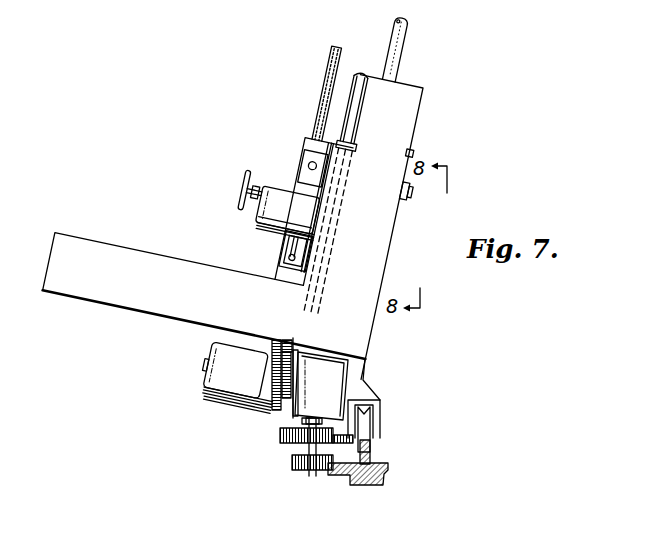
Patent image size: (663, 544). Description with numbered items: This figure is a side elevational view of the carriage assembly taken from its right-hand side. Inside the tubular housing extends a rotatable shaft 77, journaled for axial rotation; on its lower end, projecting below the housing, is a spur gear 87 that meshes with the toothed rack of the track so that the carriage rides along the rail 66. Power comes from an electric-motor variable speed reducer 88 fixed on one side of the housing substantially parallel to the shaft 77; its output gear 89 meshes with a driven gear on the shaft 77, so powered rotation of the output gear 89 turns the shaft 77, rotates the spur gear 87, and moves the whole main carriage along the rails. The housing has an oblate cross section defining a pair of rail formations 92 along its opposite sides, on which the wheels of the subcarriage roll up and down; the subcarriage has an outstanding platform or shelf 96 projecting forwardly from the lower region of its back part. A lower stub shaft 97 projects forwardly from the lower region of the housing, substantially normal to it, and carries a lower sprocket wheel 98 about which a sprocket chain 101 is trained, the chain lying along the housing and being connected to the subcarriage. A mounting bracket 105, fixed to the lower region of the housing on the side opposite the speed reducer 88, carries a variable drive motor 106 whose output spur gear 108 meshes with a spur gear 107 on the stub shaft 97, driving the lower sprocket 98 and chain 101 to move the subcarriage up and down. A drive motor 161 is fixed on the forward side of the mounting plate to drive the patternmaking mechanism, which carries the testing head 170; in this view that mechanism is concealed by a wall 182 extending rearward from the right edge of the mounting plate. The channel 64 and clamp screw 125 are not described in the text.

The guide channel 64 is at (373, 441).
The track or rail 66 is at (366, 459).
The rotatable shaft 77 is at (396, 50).
The spur gear 87 is at (293, 464).
The electric-motor variable speed reducer 88 is at (342, 373).
The output gear 89 is at (298, 438).
The rail formation 92 is at (358, 79).
The platform or shelf 96 is at (99, 257).
The lower stub shaft 97 is at (257, 377).
The lower sprocket wheel 98 is at (260, 393).
The sprocket chain 101 is at (323, 88).
The mounting bracket 105 is at (263, 408).
The variable drive motor 106 is at (218, 353).
The spur gear 107 is at (290, 345).
The output spur gear 108 is at (281, 398).
The clamp screw 125 is at (246, 174).
The drive motor 161 is at (264, 224).
The testing head 170 is at (413, 198).
The wall 182 is at (378, 226).